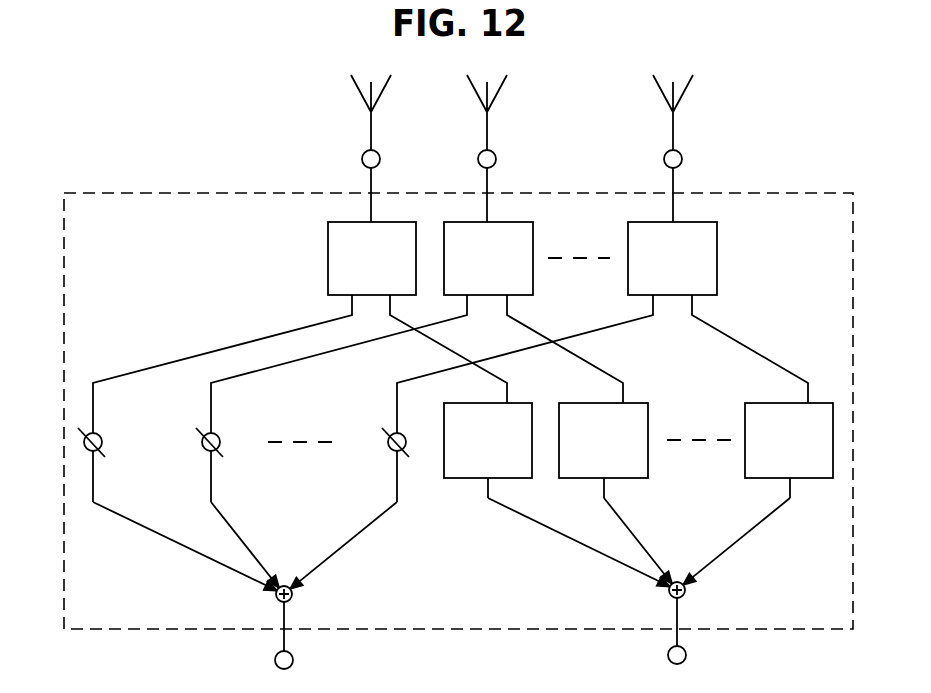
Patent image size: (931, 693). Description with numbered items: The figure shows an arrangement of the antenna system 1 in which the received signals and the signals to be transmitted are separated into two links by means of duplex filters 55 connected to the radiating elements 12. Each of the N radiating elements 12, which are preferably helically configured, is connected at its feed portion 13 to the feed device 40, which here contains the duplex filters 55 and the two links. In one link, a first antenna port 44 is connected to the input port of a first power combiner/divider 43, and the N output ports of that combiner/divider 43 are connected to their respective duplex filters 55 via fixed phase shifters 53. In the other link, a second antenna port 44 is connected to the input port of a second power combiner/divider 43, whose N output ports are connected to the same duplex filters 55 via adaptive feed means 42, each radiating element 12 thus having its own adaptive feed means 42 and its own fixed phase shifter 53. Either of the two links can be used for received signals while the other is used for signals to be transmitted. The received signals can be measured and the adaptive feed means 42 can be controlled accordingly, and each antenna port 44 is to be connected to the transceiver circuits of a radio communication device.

The antenna system 1 is at (173, 137).
The radiating elements 12 is at (656, 86).
The feed portion 13 is at (380, 159).
The feed device 40 is at (278, 193).
The adaptive feed means 42 is at (503, 480).
The power combiner/divider 43 is at (293, 595).
The antenna port 44 is at (780, 665).
The fixed phase shifters 53 is at (243, 459).
The duplex filters 55 is at (718, 312).